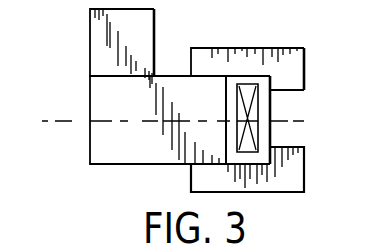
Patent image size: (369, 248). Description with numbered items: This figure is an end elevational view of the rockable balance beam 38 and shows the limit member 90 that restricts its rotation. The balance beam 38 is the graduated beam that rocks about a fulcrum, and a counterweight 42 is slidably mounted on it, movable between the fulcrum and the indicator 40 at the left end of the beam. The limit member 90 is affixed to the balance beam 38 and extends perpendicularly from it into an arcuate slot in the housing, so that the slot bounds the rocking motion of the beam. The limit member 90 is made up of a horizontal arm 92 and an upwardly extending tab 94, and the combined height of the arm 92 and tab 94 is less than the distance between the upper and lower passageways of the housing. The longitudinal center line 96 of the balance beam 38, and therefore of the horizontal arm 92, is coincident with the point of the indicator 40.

The upwardly extending tab 94 is at (142, 30).
The limit member 90 is at (128, 164).
The horizontal arm 92 is at (150, 153).
The balance beam 38 is at (227, 99).
The indicator 40 is at (237, 131).
The counterweight 42 is at (258, 48).
The longitudinal center line 96 is at (172, 122).